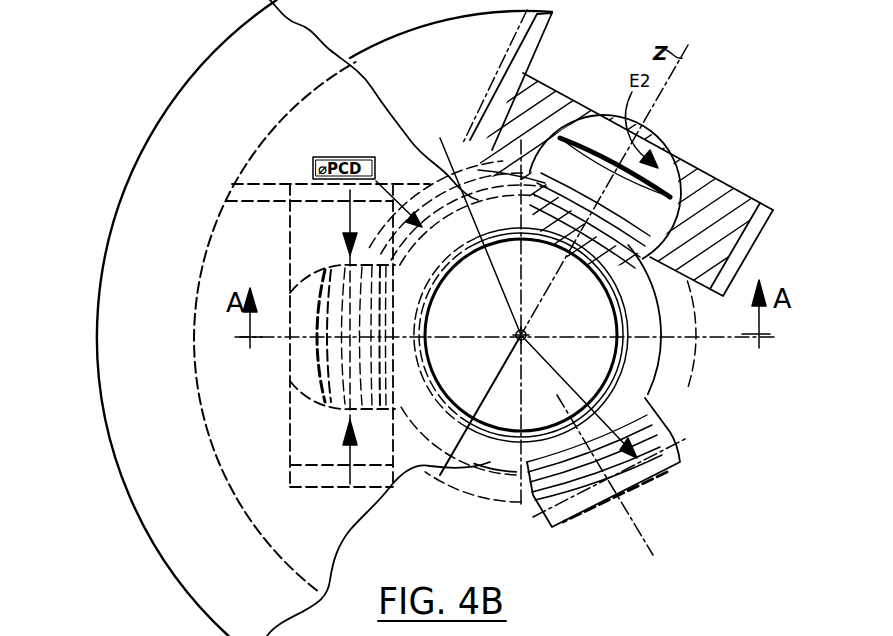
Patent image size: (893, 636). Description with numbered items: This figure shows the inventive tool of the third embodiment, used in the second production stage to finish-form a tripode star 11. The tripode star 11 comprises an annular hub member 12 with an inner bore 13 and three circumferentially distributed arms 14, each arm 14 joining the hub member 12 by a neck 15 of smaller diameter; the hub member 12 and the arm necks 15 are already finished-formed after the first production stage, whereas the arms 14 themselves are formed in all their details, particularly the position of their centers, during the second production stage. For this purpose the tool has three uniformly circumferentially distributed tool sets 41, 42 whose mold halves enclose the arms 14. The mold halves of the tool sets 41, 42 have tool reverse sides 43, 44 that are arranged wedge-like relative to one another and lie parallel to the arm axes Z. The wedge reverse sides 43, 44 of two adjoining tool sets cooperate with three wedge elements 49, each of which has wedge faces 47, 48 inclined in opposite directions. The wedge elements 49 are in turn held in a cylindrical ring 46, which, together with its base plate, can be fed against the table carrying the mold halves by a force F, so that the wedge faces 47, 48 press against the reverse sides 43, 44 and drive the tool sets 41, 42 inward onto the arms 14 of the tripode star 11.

The tripode star 11 is at (668, 318).
The annular hub member 12 is at (643, 378).
The inner bore 13 is at (612, 300).
The arm 14 is at (665, 140).
The neck 15 is at (530, 287).
The tool set 41 is at (580, 102).
The tool set 42 is at (736, 198).
The tool reverse side 43 is at (486, 108).
The tool reverse side 44 is at (775, 230).
The cylindrical ring 46 is at (150, 314).
The wedge face 47 is at (540, 43).
The wedge face 48 is at (265, 195).
The wedge element 49 is at (300, 169).